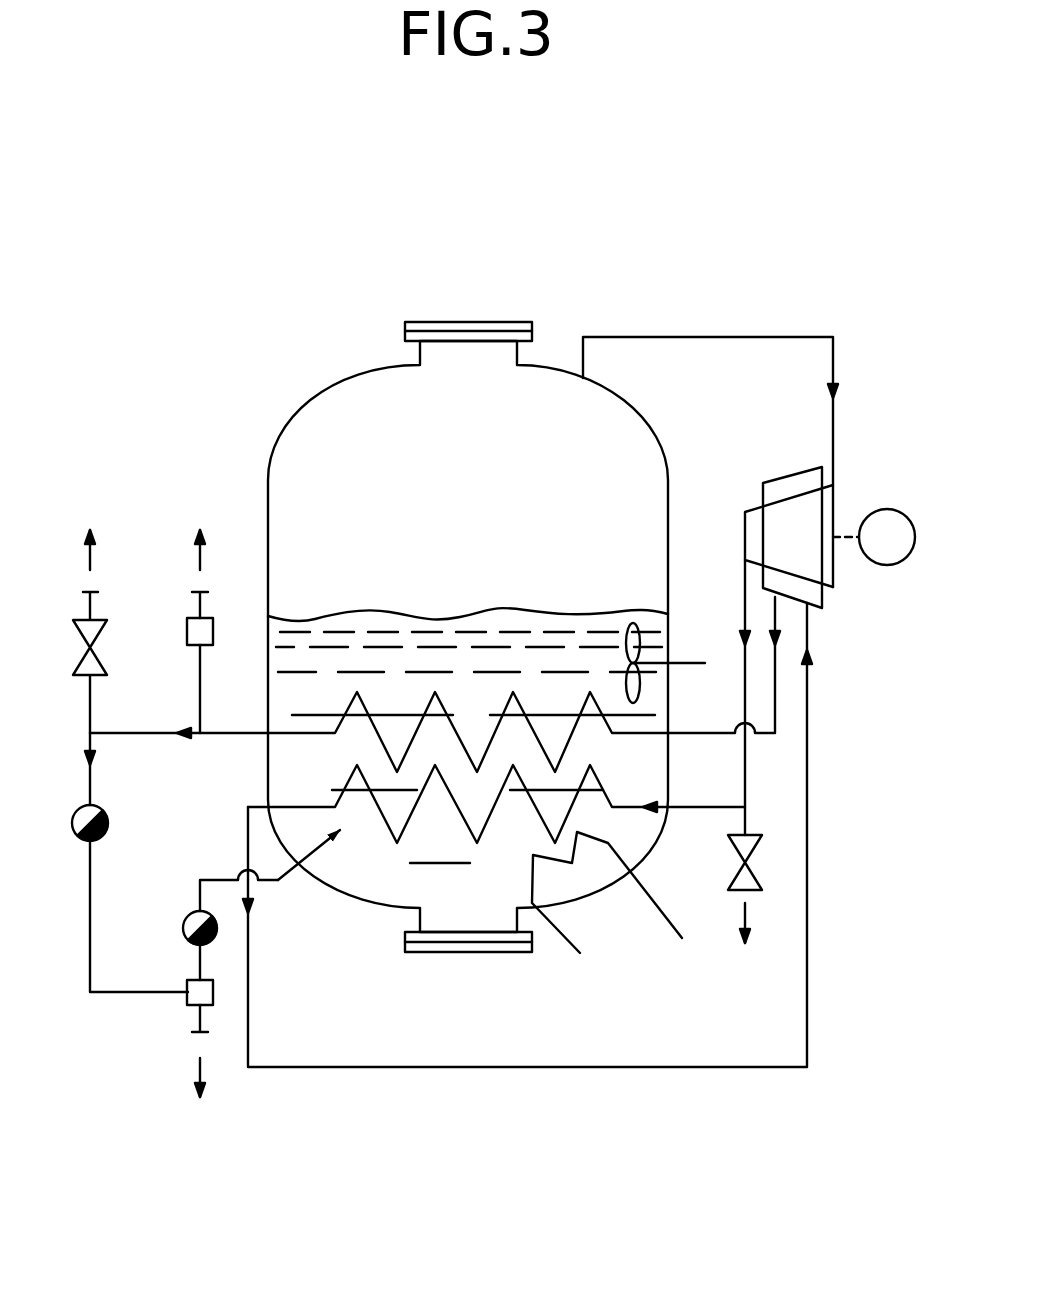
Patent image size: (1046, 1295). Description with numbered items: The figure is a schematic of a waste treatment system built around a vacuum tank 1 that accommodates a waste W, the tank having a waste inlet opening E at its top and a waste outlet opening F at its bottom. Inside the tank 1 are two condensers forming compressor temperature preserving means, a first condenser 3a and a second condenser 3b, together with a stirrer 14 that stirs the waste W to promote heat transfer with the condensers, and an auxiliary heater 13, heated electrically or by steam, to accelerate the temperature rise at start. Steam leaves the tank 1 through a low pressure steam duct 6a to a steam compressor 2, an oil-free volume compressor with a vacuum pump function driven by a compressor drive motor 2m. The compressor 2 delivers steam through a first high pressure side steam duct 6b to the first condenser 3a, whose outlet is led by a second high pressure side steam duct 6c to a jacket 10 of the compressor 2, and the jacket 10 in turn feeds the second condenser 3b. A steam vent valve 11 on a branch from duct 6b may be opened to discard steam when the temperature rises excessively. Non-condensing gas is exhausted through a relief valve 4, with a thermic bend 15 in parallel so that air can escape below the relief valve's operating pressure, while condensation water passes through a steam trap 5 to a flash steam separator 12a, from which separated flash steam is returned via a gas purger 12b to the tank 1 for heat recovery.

The vacuum tank 1 is at (297, 420).
The waste inlet opening E is at (448, 313).
The waste outlet opening F is at (440, 953).
The waste W is at (468, 607).
The first condenser 3a is at (445, 767).
The second condenser 3b is at (427, 707).
The stirrer 14 is at (620, 620).
The auxiliary heater 13 is at (567, 943).
The low pressure steam duct 6a is at (713, 328).
The first high pressure side steam duct 6b is at (747, 688).
The second high pressure side steam duct 6c is at (705, 1060).
The jacket 10 is at (787, 467).
The steam compressor 2 is at (857, 593).
The compressor drive motor 2m is at (883, 505).
The steam vent valve 11 is at (760, 857).
The relief valve 4 is at (113, 635).
The thermic bend 15 is at (180, 630).
The steam trap 5 is at (115, 822).
The gas purger 12b is at (178, 912).
The flash steam separator 12a is at (213, 1007).